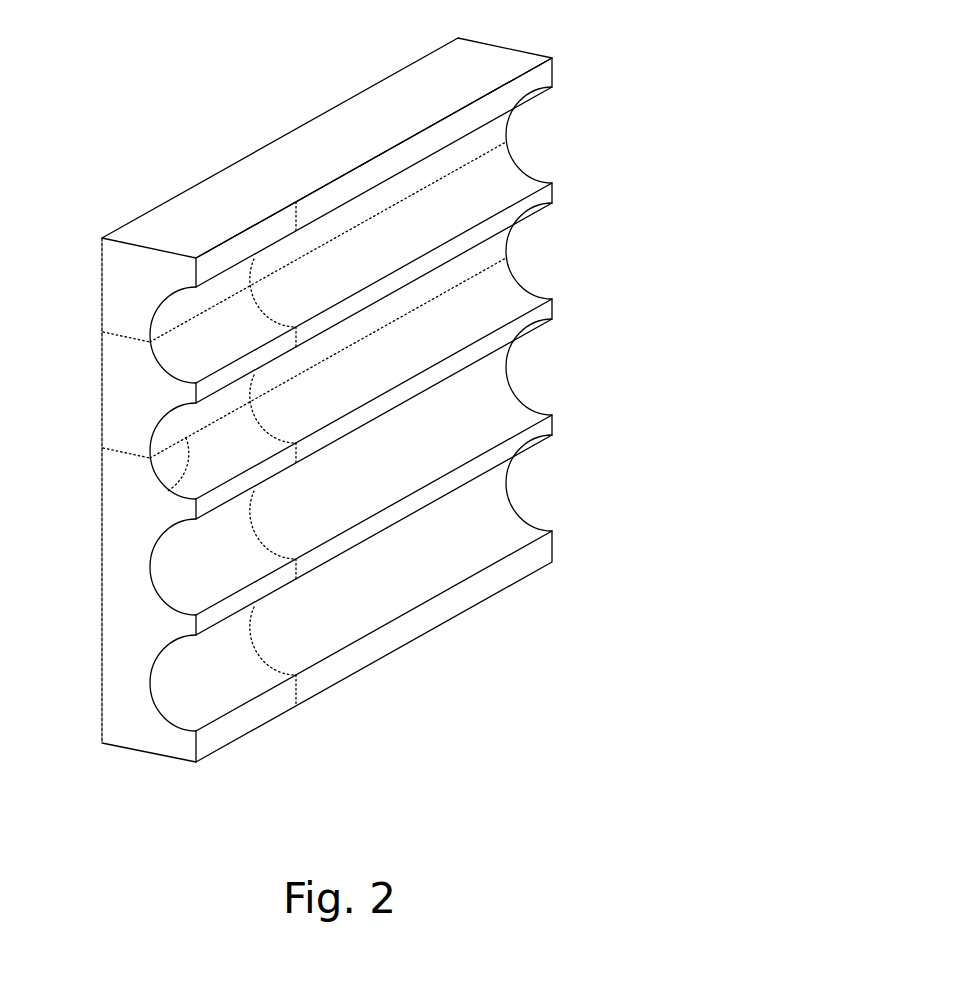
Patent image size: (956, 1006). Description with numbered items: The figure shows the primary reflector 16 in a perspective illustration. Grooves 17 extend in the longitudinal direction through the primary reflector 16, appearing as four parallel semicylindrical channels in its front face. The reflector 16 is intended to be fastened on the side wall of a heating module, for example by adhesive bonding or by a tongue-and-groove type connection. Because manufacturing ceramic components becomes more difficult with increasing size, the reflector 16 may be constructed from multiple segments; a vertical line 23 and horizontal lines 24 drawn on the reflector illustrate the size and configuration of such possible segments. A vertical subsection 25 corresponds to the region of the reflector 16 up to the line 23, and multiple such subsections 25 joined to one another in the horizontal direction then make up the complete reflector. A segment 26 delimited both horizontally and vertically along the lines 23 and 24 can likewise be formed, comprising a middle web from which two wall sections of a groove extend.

The primary reflector 16 is at (338, 142).
The grooves 17 is at (513, 150).
The vertical line 23 is at (270, 655).
The horizontal line 24 is at (213, 310).
The vertical subsection 25 is at (221, 752).
The segment 26 is at (130, 398).